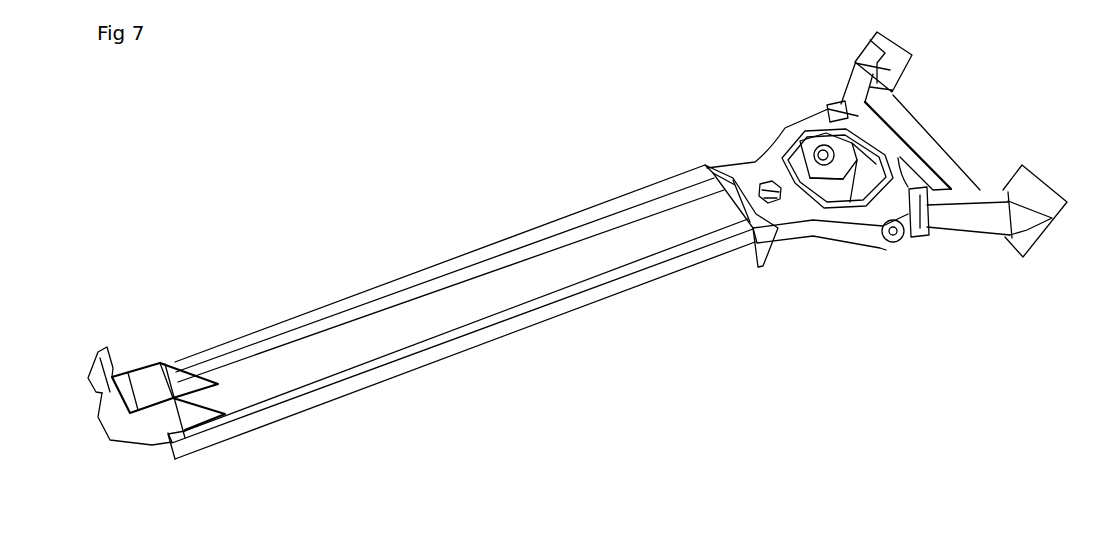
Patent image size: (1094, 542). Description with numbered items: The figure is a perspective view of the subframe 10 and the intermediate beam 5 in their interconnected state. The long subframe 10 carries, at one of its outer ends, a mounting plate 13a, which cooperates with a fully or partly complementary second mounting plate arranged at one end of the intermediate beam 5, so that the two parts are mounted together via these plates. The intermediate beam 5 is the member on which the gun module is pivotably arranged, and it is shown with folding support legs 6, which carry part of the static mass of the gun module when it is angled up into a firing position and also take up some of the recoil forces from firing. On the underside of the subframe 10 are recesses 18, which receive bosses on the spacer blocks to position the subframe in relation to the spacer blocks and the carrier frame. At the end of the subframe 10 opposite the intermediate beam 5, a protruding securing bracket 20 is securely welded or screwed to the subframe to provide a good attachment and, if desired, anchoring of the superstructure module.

The intermediate beam 5 is at (755, 162).
The folding support legs 6 is at (907, 127).
The subframe 10 is at (505, 241).
The mounting plate 13a is at (715, 203).
The recesses 18 is at (418, 367).
The protruding securing bracket 20 is at (113, 377).